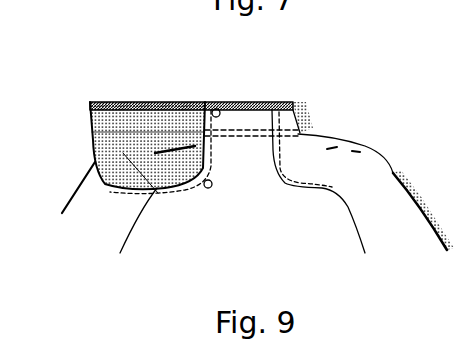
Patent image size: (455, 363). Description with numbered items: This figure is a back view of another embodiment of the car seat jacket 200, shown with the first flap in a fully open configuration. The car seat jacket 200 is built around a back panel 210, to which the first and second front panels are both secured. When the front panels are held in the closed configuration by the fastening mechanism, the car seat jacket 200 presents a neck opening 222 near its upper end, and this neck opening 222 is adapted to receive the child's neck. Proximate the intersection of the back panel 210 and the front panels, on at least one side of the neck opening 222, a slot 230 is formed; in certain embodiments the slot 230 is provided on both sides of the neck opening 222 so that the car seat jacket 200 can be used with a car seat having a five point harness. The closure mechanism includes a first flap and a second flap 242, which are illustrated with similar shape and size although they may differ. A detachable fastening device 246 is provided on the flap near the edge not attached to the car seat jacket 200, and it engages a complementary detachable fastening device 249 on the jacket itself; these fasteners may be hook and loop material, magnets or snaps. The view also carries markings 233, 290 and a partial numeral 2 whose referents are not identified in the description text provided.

The car seat jacket 200 is at (258, 127).
The back panel 210 is at (157, 250).
The neck opening 222 is at (243, 102).
The slot 230 is at (334, 143).
The pocket opening 233 is at (172, 147).
The second flap 242 is at (304, 178).
The detachable fastening device 246 is at (93, 102).
The complementary detachable fastening device 249 is at (209, 189).
The pocket panel 290 is at (88, 133).
The partial numeral 2 is at (402, 132).